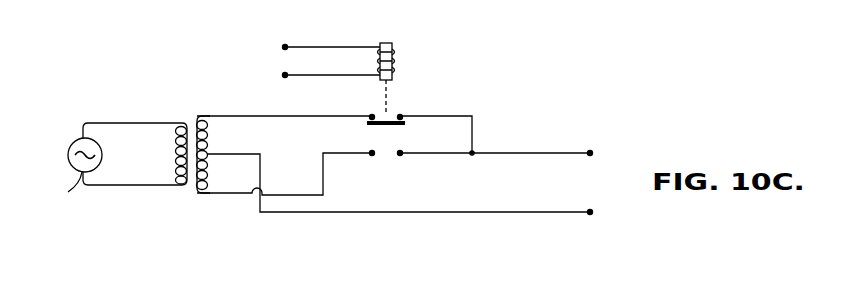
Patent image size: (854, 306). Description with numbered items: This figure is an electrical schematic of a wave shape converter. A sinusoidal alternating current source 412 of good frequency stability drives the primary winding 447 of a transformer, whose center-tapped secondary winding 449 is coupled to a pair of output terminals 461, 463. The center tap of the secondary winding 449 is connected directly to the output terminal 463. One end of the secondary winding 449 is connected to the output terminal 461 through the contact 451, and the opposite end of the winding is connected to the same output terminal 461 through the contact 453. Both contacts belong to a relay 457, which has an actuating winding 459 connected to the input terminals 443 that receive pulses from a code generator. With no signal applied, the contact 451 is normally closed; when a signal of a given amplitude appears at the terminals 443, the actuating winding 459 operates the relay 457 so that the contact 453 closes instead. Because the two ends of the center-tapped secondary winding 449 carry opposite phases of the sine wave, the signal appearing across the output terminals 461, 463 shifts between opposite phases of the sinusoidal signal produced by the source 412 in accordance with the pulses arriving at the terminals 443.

The sinusoidal alternating current source 412 is at (71, 143).
The terminals 443 is at (284, 72).
The primary winding 447 is at (176, 158).
The center-tapped secondary winding 449 is at (208, 141).
The contact 451 is at (392, 114).
The contact 453 is at (387, 154).
The relay 457 is at (390, 37).
The actuating winding 459 is at (395, 59).
The output terminal 461 is at (592, 152).
The output terminal 463 is at (592, 213).